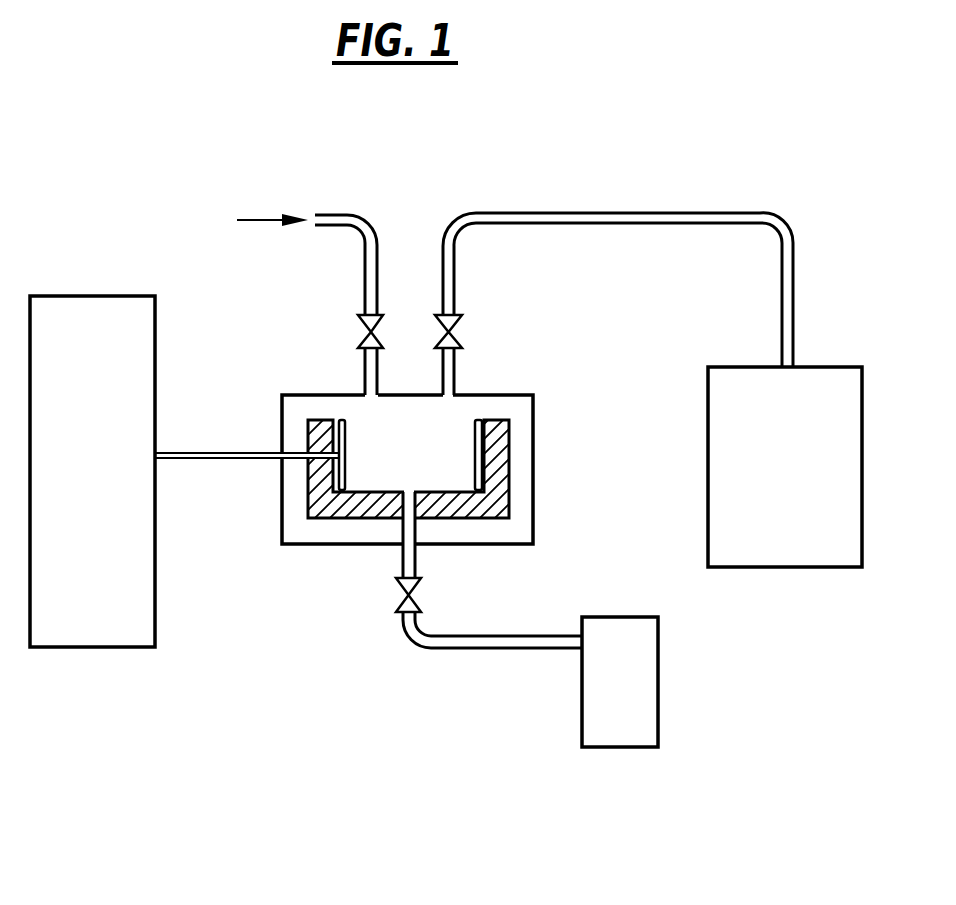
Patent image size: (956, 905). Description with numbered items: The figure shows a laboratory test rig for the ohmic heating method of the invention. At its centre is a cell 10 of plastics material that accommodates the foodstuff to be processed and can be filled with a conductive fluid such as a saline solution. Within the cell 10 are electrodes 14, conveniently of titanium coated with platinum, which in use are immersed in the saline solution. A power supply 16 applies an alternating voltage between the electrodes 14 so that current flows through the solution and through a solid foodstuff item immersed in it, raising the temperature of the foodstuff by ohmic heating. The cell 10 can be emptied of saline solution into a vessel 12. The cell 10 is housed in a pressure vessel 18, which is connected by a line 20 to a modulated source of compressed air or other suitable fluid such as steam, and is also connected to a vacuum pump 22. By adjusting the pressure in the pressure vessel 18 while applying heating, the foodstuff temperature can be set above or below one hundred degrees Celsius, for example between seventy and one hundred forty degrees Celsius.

The cell 10 is at (366, 486).
The vessel 12 is at (636, 697).
The electrodes 14 is at (473, 437).
The power supply 16 is at (75, 488).
The pressure vessel 18 is at (535, 408).
The line 20 is at (340, 216).
The vacuum pump 22 is at (765, 480).